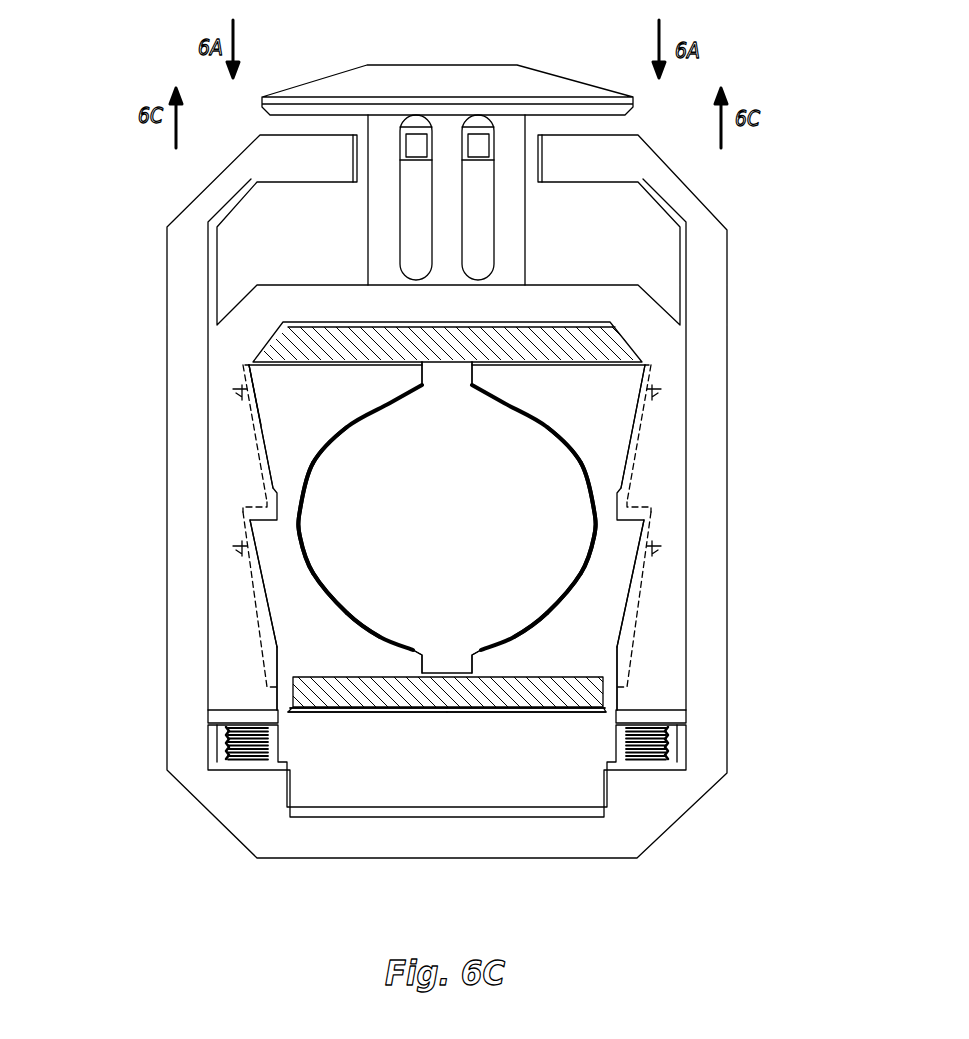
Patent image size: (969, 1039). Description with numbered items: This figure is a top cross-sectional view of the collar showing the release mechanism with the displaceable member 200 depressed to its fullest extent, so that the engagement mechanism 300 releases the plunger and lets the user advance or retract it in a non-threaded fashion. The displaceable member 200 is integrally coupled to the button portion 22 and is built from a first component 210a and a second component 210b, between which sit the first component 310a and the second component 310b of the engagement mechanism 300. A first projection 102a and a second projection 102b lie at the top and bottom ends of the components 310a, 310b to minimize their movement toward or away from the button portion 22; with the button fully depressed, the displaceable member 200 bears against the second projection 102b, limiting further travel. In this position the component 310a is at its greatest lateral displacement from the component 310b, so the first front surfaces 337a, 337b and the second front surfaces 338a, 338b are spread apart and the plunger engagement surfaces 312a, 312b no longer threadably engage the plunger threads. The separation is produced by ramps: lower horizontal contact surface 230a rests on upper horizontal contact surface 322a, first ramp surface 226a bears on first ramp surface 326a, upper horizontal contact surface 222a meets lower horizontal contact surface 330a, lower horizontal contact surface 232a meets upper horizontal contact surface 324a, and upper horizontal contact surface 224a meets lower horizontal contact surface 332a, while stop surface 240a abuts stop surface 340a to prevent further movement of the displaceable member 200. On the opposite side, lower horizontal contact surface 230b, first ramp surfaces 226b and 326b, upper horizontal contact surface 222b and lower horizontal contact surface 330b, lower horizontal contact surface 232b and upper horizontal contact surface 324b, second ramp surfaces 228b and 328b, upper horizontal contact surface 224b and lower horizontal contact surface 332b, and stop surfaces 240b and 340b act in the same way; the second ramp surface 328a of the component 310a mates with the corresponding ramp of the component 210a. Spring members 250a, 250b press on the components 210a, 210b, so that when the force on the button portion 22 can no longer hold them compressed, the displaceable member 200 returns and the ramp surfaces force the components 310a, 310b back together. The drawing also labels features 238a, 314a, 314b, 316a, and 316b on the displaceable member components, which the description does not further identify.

The button portion 22 is at (497, 70).
The displaceable member 200 is at (621, 246).
The first projection 102a is at (603, 337).
The second projection 102b is at (463, 702).
The engagement mechanism 300 is at (442, 748).
The first component 310a is at (300, 377).
The second component 310b is at (572, 377).
The plunger engagement surface 312a is at (323, 460).
The plunger engagement surface 312b is at (572, 460).
The upper horizontal contact surface 322a is at (253, 380).
The first ramp surface 326a is at (310, 481).
The first ramp surface 326b is at (583, 481).
The lower horizontal contact surface 330a is at (303, 512).
The lower horizontal contact surface 330b is at (591, 512).
The stop surface 340a is at (307, 547).
The stop surface 340b is at (589, 547).
The upper horizontal contact surface 324a is at (322, 587).
The upper horizontal contact surface 324b is at (573, 587).
The second ramp surface 328a is at (360, 621).
The second ramp surface 328b is at (536, 621).
The first front surface 337a is at (420, 377).
The first front surface 337b is at (474, 377).
The second front surface 338a is at (420, 660).
The second front surface 338b is at (474, 660).
The lower horizontal contact surface 332a is at (347, 707).
The lower horizontal contact surface 332b is at (570, 710).
The first component 210a is at (243, 693).
The second component 210b is at (667, 688).
The upper horizontal contact surface 222a is at (267, 506).
The upper horizontal contact surface 222b is at (627, 505).
The upper horizontal contact surface 224a is at (323, 677).
The upper horizontal contact surface 224b is at (571, 677).
The first ramp surface 226a is at (307, 470).
The first ramp surface 226b is at (588, 466).
The second ramp surface 228b is at (567, 613).
The first arm lower portion 238a is at (327, 613).
The lower horizontal contact surface 230a is at (242, 367).
The lower horizontal contact surface 230b is at (652, 370).
The lower horizontal contact surface 232a is at (241, 527).
The lower horizontal contact surface 232b is at (653, 529).
The stop surface 240a is at (241, 509).
The stop surface 240b is at (651, 508).
The first upper tab 314a is at (238, 390).
The second upper tab 314b is at (662, 390).
The first lower tab 316a is at (233, 548).
The second lower tab 316b is at (661, 548).
The spring member 250a is at (227, 743).
The spring member 250b is at (663, 745).